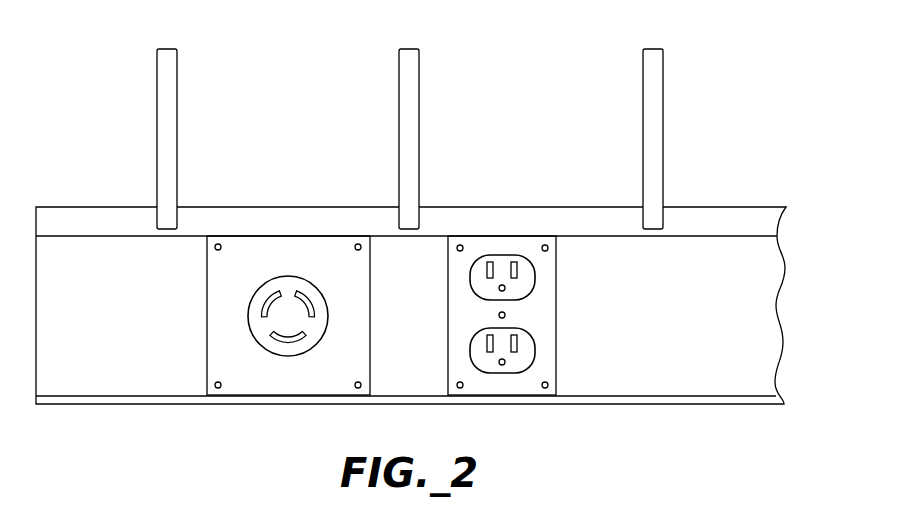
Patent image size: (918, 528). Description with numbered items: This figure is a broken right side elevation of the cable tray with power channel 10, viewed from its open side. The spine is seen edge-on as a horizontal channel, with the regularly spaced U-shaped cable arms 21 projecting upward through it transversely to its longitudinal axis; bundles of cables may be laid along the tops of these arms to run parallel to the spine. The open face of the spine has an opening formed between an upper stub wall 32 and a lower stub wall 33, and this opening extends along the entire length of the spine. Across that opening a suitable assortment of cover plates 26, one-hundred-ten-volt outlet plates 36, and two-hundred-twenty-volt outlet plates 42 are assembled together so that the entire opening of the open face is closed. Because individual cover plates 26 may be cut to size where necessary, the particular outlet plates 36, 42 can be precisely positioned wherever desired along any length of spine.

The cable tray with power channel 10 is at (714, 94).
The cable arms 21 is at (647, 126).
The cover plates 26 is at (763, 318).
The upper stub wall 32 is at (103, 207).
The lower stub wall 33 is at (104, 402).
The 110 V outlet plates 36 is at (497, 243).
The 220 V outlet plates 42 is at (279, 242).